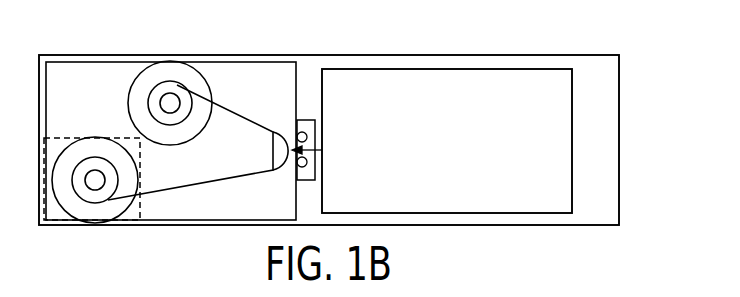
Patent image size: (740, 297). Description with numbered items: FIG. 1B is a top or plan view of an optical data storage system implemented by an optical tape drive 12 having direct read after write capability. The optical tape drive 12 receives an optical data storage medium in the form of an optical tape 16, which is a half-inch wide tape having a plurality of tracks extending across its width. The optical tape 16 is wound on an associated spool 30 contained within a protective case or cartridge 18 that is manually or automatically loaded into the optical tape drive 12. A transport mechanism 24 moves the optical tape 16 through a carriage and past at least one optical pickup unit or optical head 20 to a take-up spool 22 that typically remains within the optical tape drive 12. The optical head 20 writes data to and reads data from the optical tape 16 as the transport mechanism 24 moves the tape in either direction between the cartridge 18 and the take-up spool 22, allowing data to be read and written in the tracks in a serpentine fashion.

The optical tape drive 12 is at (620, 82).
The optical tape 16 is at (200, 182).
The cartridge 18 is at (114, 140).
The optical head 20 is at (563, 117).
The take-up spool 22 is at (178, 77).
The transport mechanism 24 is at (76, 75).
The spool 30 is at (90, 212).